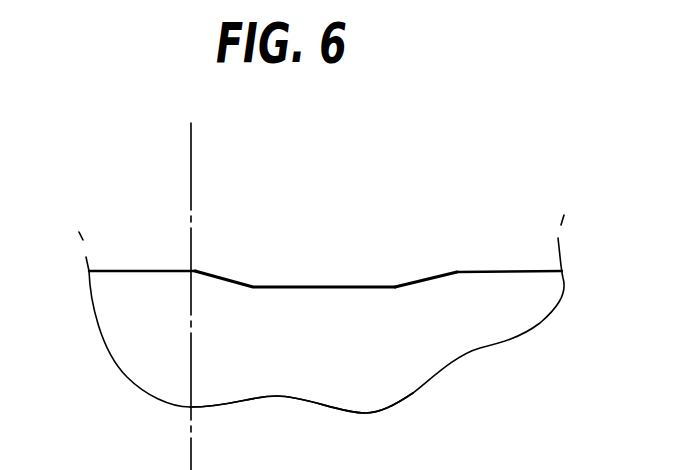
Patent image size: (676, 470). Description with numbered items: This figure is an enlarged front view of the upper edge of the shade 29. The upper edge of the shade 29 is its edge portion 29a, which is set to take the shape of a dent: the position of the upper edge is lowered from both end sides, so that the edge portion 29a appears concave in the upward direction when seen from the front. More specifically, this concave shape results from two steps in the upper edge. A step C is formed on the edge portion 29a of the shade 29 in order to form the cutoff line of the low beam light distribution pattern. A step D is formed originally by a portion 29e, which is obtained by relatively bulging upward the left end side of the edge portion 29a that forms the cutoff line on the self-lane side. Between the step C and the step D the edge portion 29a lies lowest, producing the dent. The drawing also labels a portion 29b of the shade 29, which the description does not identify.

The shade 29 is at (144, 333).
The edge portion 29a is at (157, 268).
The bottom curved surface 29b is at (413, 353).
The portion 29e is at (508, 270).
The step C is at (223, 275).
The step D is at (435, 272).